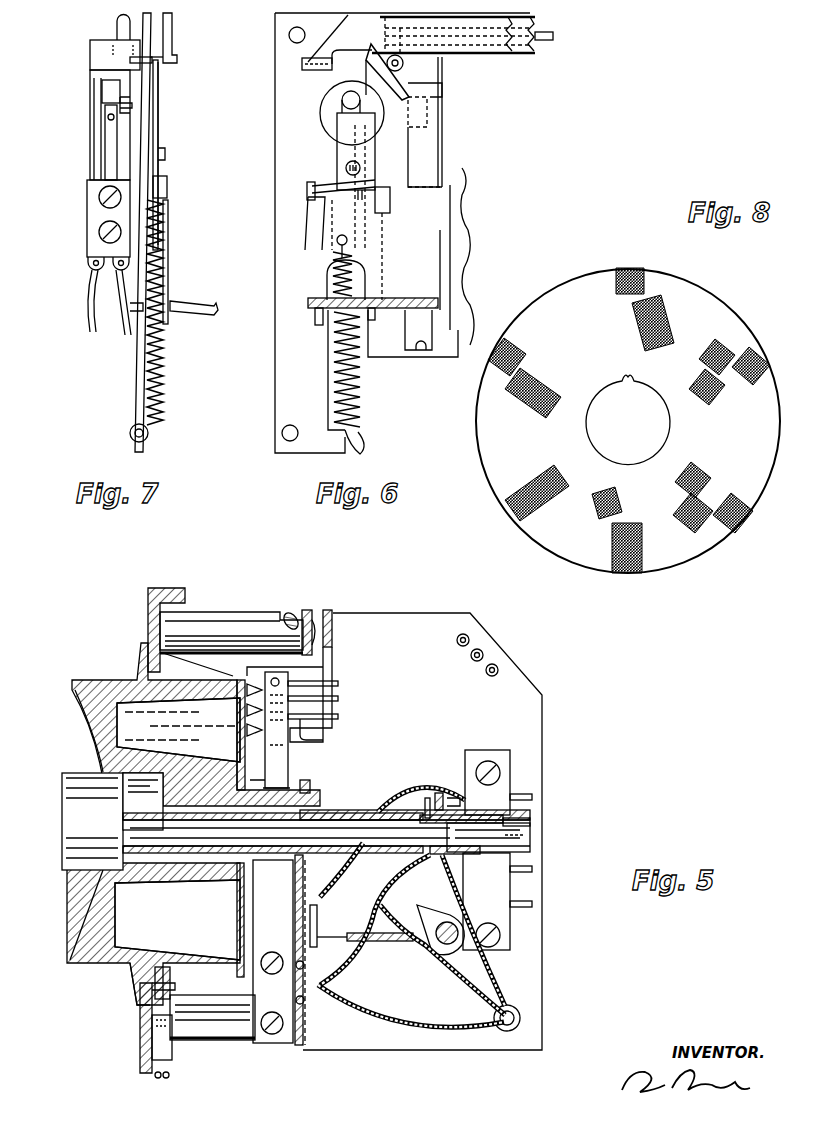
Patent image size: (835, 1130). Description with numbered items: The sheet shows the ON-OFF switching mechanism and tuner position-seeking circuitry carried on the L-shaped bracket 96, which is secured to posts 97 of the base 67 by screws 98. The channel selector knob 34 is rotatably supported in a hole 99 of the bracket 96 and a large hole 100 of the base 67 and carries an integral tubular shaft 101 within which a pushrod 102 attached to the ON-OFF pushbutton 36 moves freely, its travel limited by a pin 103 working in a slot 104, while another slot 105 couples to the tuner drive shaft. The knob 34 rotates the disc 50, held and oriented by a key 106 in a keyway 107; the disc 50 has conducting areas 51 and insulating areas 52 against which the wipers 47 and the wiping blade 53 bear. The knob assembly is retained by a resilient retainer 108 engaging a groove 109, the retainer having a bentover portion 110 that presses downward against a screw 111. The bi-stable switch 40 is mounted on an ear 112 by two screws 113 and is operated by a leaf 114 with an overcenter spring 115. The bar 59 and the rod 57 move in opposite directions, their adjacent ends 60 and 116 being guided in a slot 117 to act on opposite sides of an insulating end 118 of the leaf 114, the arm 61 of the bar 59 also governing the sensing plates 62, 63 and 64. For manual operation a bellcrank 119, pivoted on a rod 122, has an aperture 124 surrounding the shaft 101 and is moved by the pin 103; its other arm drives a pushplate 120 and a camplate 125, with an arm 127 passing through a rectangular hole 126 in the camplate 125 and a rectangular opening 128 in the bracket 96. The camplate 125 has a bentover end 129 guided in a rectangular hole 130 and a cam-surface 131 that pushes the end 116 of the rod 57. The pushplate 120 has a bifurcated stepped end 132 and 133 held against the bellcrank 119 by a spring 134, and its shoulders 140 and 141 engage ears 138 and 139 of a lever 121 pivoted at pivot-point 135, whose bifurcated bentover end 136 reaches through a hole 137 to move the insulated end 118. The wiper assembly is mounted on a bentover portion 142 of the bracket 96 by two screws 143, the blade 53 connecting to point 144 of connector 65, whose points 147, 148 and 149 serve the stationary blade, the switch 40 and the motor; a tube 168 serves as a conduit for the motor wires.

In FIG. 5, the channel selector knob 34 is at (100, 680).
In FIG. 5, the ON-OFF pushbutton 36 is at (105, 815).
In FIG. 7, the bi-stable switch 40 is at (84, 141).
In FIG. 5, the wiper 47 is at (287, 769).
In FIG. 8, the disc 50 is at (596, 344).
In FIG. 5, the disc 50 is at (237, 928).
In FIG. 8, the conducting areas 51 is at (586, 556).
In FIG. 8, the non-conducting areas 52 is at (630, 572).
In FIG. 5, the wiper 53 is at (237, 880).
In FIG. 6, the rod 57 is at (549, 42).
In FIG. 5, the rod 57 is at (290, 612).
In FIG. 6, the shift-bar 59 is at (369, 38).
In FIG. 5, the shift-bar 59 is at (333, 612).
In FIG. 7, the arm 60 is at (116, 38).
In FIG. 5, the arm 61 is at (333, 660).
In FIG. 5, the sensing plate 62 is at (338, 683).
In FIG. 5, the sensing plate 63 is at (338, 698).
In FIG. 5, the sensing plate 64 is at (338, 716).
In FIG. 5, the connector 65 is at (498, 897).
In FIG. 5, the base 67 is at (168, 600).
In FIG. 7, the L-shaped bracket 96 is at (137, 370).
In FIG. 6, the L-shaped bracket 96 is at (314, 384).
In FIG. 5, the L-shaped bracket 96 is at (441, 706).
In FIG. 5, the posts 97 is at (225, 615).
In FIG. 5, the screws 98 is at (310, 615).
In FIG. 5, the hole 99 is at (312, 792).
In FIG. 5, the large hole 100 is at (132, 985).
In FIG. 5, the tubular shaft 101 is at (332, 808).
In FIG. 5, the pushrod 102 is at (366, 808).
In FIG. 5, the pin 103 is at (440, 792).
In FIG. 5, the slot 104 is at (455, 813).
In FIG. 5, the slot 105 is at (530, 820).
In FIG. 5, the key 106 is at (270, 781).
In FIG. 8, the keyway 107 is at (633, 379).
In FIG. 5, the keyway 107 is at (215, 780).
In FIG. 5, the resilient retainer 108 is at (140, 1010).
In FIG. 5, the groove 109 is at (170, 980).
In FIG. 5, the bentover portion 110 is at (170, 1030).
In FIG. 5, the screw 111 is at (168, 1077).
In FIG. 6, the ear 112 is at (385, 240).
In FIG. 7, the screws 113 is at (92, 228).
In FIG. 7, the leaf 114 is at (92, 108).
In FIG. 7, the overcenter spring 115 is at (103, 91).
In FIG. 6, the overcenter spring 115 is at (343, 102).
In FIG. 7, the end of rod 116 is at (173, 60).
In FIG. 6, the end of rod 116 is at (403, 64).
In FIG. 6, the slot 117 is at (340, 70).
In FIG. 7, the insulating end 118 is at (90, 52).
In FIG. 7, the bellcrank 119 is at (200, 310).
In FIG. 6, the bellcrank 119 is at (310, 303).
In FIG. 5, the bellcrank 119 is at (388, 942).
In FIG. 7, the pushplate 120 is at (168, 286).
In FIG. 6, the pushplate 120 is at (318, 242).
In FIG. 5, the pushplate 120 is at (317, 920).
In FIG. 7, the lever 121 is at (158, 138).
In FIG. 6, the lever 121 is at (338, 178).
In FIG. 5, the rod 122 is at (447, 945).
In FIG. 5, the aperture 124 is at (458, 850).
In FIG. 7, the camplate 125 is at (158, 82).
In FIG. 6, the camplate 125 is at (434, 153).
In FIG. 6, the rectangular hole 126 is at (440, 302).
In FIG. 7, the arm 127 is at (114, 312).
In FIG. 6, the rectangular opening 128 is at (425, 352).
In FIG. 6, the bentover end 129 is at (445, 95).
In FIG. 6, the rectangular hole 130 is at (443, 89).
In FIG. 6, the cam-surface 131 is at (388, 83).
In FIG. 6, the bifurcated stepped end 132 is at (318, 326).
In FIG. 6, the bifurcated stepped end 133 is at (372, 322).
In FIG. 7, the spring 134 is at (157, 357).
In FIG. 6, the spring 134 is at (360, 390).
In FIG. 7, the pivot-point 135 is at (166, 155).
In FIG. 6, the pivot-point 135 is at (346, 165).
In FIG. 7, the bifurcated bentover end 136 is at (133, 105).
In FIG. 6, the hole 137 is at (330, 128).
In FIG. 7, the bentover ear 138 is at (168, 186).
In FIG. 6, the bentover ear 138 is at (308, 192).
In FIG. 6, the bentover ear 139 is at (386, 197).
In FIG. 6, the shoulder 140 is at (310, 204).
In FIG. 6, the shoulder 141 is at (361, 200).
In FIG. 5, the bentover portion 142 is at (302, 1046).
In FIG. 5, the screws 143 is at (272, 1044).
In FIG. 5, the point 144 is at (533, 836).
In FIG. 5, the point 147 is at (533, 869).
In FIG. 5, the point 148 is at (533, 797).
In FIG. 5, the point 149 is at (533, 904).
In FIG. 5, the tube 168 is at (520, 1012).